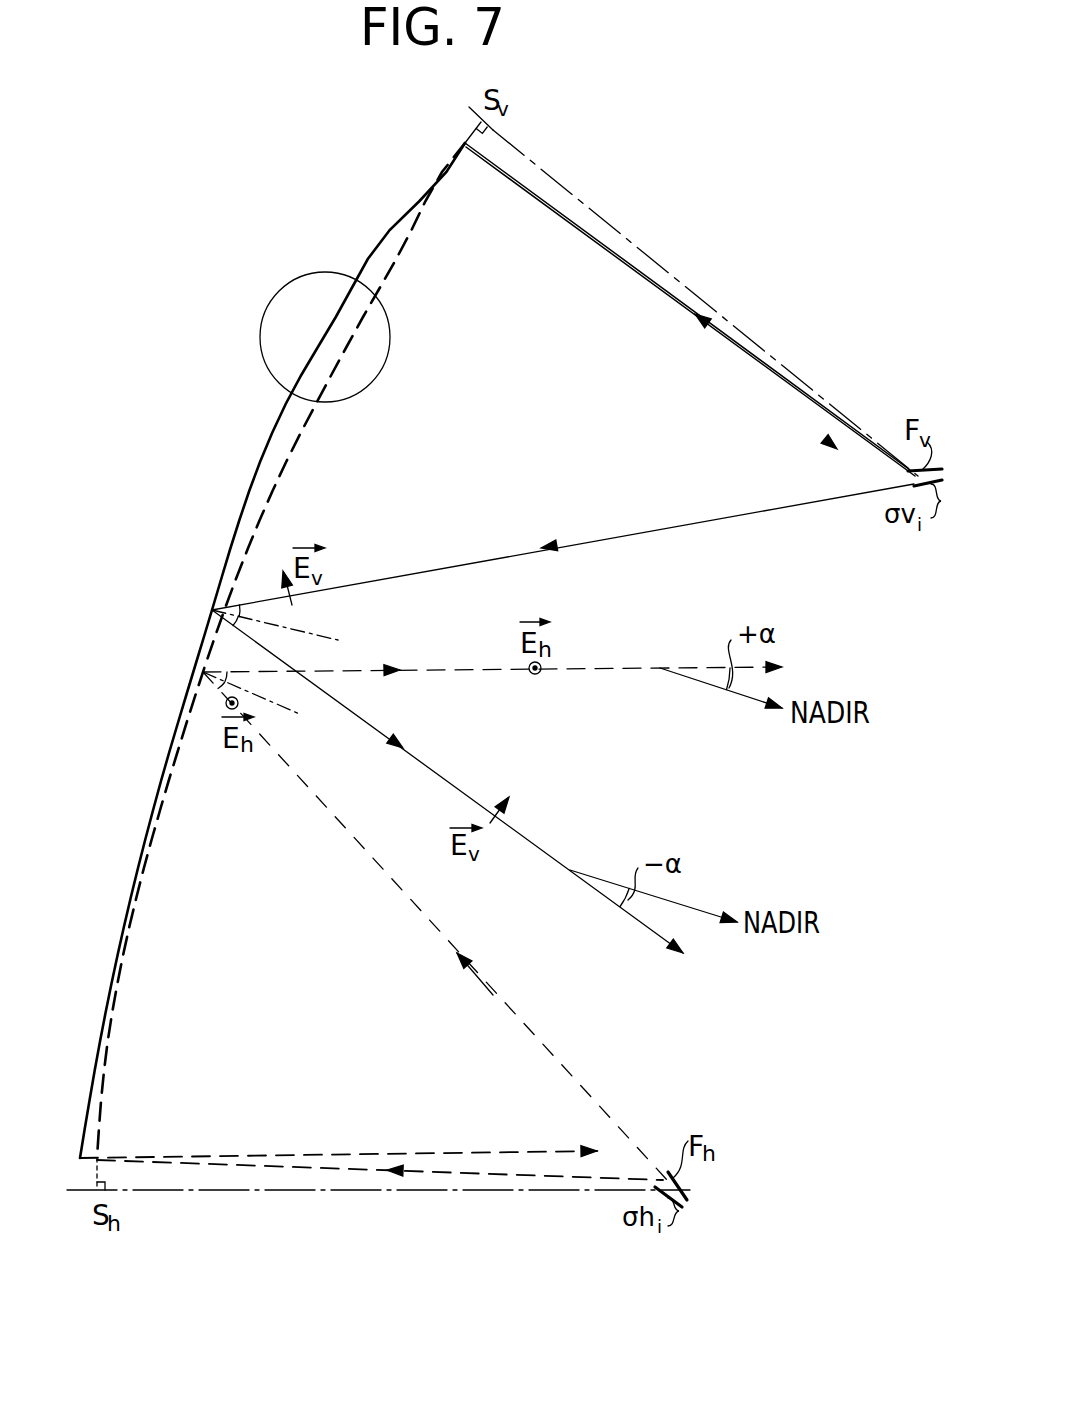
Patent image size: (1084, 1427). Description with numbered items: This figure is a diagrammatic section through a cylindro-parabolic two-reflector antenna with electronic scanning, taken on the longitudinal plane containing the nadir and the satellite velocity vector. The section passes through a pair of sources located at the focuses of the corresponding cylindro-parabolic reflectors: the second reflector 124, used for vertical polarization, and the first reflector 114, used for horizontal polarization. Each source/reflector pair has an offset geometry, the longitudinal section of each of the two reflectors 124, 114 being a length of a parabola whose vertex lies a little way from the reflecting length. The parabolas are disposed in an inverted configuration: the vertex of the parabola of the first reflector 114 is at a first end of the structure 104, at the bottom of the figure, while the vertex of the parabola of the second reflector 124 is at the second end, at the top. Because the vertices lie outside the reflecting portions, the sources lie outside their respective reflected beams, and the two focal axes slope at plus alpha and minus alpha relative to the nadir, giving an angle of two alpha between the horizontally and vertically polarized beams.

The structure 104 is at (280, 650).
The second reflector 124 is at (387, 232).
The first reflector 114 is at (407, 240).